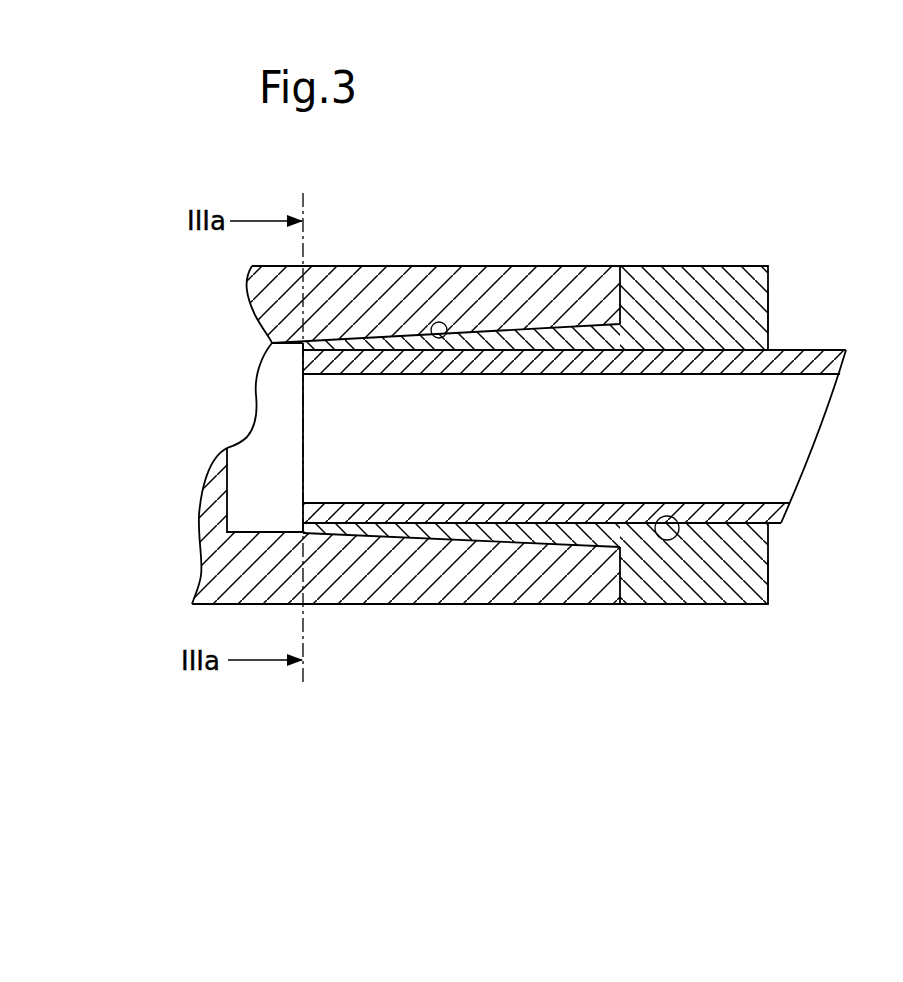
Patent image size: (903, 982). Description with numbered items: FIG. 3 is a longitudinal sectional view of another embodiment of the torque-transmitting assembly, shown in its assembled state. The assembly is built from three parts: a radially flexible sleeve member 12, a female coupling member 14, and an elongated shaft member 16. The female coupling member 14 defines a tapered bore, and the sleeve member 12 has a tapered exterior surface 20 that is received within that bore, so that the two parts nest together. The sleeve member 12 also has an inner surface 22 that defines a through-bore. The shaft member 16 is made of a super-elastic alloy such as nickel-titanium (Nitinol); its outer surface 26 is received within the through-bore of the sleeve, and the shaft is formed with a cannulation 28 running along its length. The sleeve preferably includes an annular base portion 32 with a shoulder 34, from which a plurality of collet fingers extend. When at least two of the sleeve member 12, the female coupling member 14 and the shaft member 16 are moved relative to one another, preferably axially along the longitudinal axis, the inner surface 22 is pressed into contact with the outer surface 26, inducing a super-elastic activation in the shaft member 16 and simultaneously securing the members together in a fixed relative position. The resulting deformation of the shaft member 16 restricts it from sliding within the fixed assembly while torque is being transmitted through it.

The sleeve member 12 is at (699, 263).
The female coupling member 14 is at (475, 264).
The elongated shaft member 16 is at (811, 346).
The tapered exterior surface 20 is at (448, 337).
The inner surface 22 is at (553, 349).
The outer surface 26 is at (654, 516).
The cannulation 28 is at (777, 454).
The annular base portion 32 is at (748, 296).
The shoulder 34 is at (613, 577).